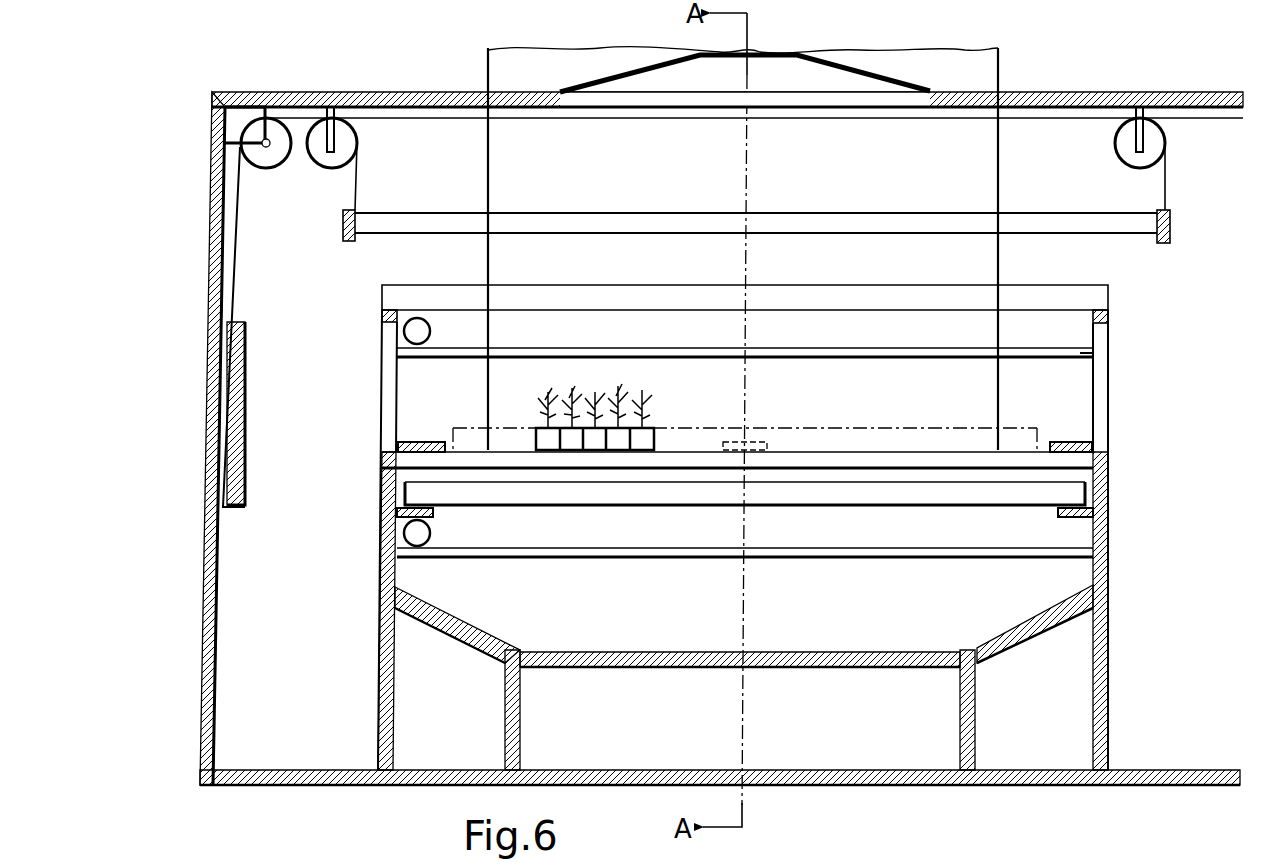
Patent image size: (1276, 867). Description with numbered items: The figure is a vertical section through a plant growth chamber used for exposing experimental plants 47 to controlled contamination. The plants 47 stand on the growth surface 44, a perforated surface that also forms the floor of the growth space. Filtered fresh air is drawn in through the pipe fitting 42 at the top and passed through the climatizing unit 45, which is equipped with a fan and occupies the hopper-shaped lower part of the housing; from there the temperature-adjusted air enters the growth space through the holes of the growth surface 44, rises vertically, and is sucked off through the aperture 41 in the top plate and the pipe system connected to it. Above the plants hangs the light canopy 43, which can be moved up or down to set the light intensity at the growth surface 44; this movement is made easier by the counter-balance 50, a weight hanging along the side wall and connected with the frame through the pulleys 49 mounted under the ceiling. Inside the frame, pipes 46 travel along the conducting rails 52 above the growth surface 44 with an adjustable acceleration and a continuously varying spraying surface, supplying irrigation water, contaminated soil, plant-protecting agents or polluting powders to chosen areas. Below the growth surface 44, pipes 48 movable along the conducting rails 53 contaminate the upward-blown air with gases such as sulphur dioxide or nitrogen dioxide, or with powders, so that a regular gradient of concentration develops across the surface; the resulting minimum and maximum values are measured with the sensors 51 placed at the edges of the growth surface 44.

The aperture 41 is at (777, 57).
The pipe fitting 42 is at (975, 82).
The light canopy 43 is at (1128, 220).
The growth surface 44 is at (940, 452).
The climatizing unit 45 is at (817, 720).
The pipes 46 is at (415, 330).
The experimental plants 47 is at (655, 440).
The pipes 48 is at (405, 533).
The pulleys 49 is at (317, 160).
The counter-balance 50 is at (236, 405).
The sensors 51 is at (400, 443).
The conducting rails 52 is at (1080, 353).
The conducting rails 53 is at (1077, 553).